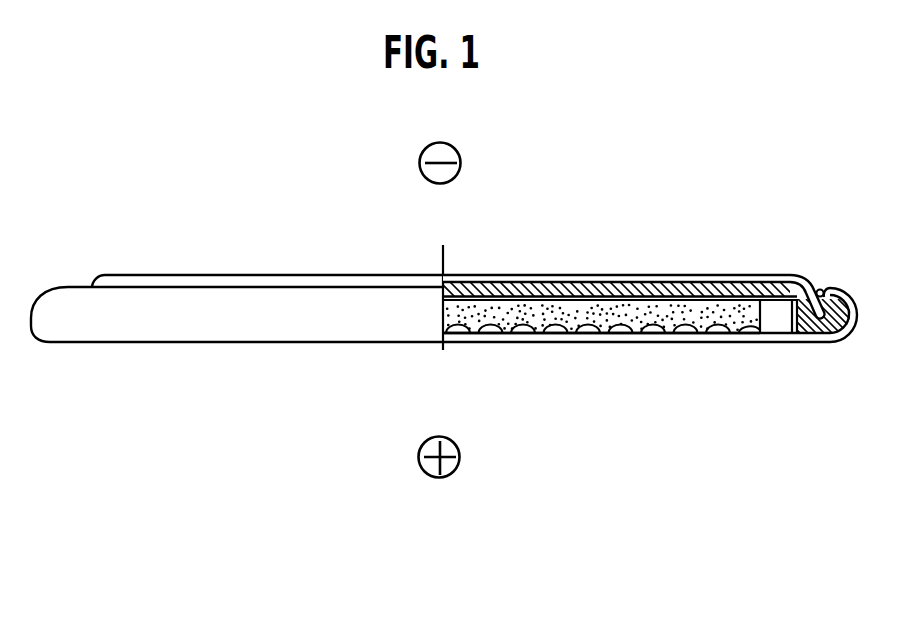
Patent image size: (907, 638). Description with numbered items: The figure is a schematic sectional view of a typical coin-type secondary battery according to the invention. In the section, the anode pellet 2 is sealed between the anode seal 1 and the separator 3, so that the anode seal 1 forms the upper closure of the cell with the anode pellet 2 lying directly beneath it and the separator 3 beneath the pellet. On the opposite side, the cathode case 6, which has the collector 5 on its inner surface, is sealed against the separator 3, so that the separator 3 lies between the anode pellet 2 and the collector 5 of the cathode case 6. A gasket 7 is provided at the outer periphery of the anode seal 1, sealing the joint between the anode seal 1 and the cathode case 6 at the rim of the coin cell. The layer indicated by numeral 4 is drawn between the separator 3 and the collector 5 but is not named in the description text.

The anode seal 1 is at (477, 280).
The anode pellet 2 is at (527, 291).
The separator 3 is at (570, 298).
The positive electrode 4 is at (619, 305).
The collector 5 is at (654, 327).
The cathode case 6 is at (701, 342).
The gasket 7 is at (821, 290).